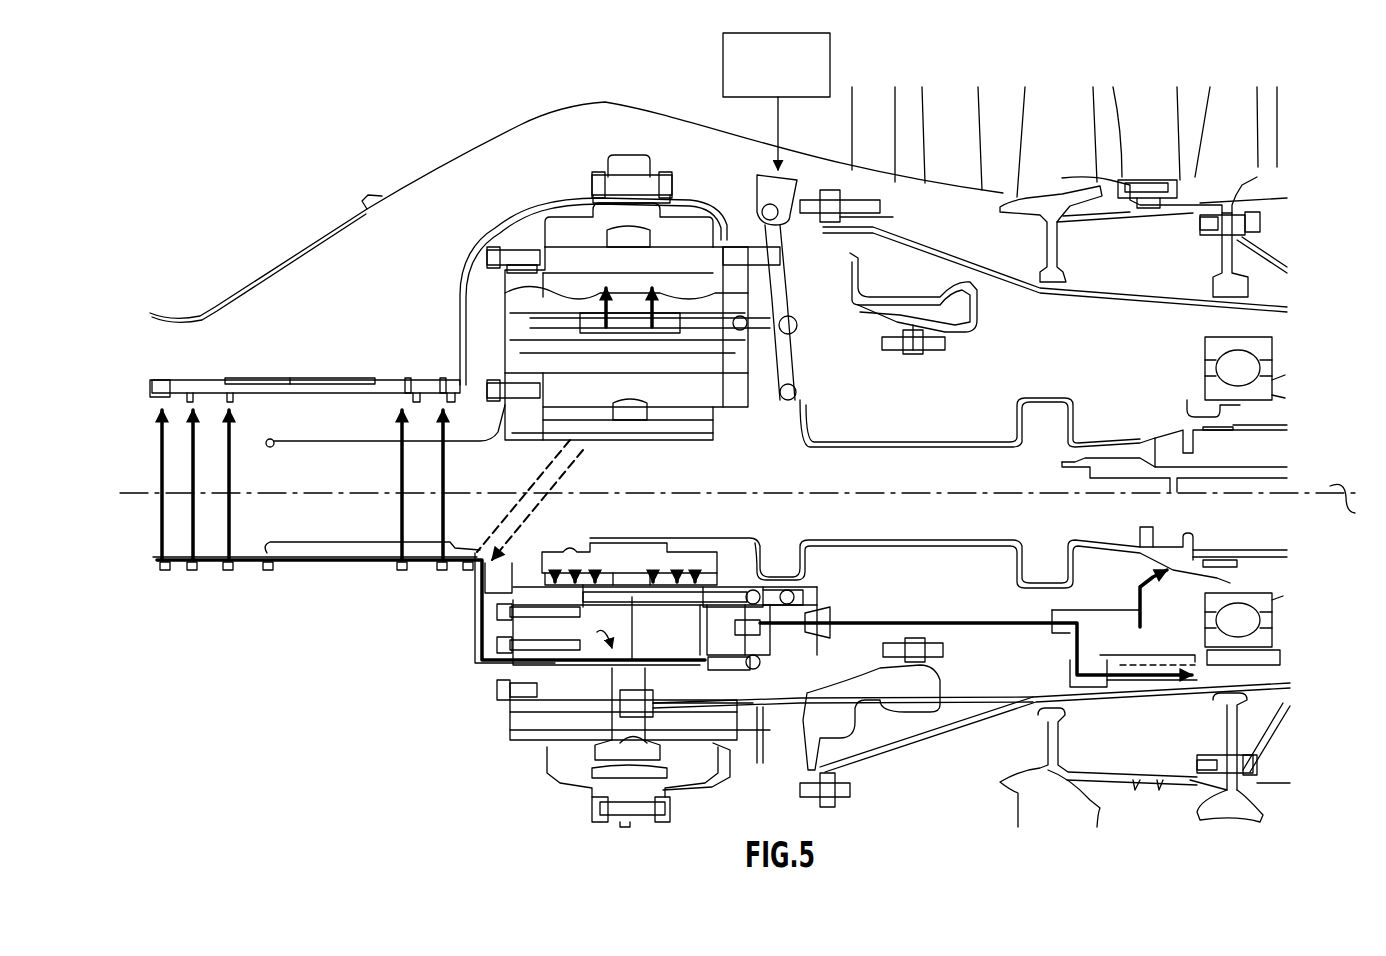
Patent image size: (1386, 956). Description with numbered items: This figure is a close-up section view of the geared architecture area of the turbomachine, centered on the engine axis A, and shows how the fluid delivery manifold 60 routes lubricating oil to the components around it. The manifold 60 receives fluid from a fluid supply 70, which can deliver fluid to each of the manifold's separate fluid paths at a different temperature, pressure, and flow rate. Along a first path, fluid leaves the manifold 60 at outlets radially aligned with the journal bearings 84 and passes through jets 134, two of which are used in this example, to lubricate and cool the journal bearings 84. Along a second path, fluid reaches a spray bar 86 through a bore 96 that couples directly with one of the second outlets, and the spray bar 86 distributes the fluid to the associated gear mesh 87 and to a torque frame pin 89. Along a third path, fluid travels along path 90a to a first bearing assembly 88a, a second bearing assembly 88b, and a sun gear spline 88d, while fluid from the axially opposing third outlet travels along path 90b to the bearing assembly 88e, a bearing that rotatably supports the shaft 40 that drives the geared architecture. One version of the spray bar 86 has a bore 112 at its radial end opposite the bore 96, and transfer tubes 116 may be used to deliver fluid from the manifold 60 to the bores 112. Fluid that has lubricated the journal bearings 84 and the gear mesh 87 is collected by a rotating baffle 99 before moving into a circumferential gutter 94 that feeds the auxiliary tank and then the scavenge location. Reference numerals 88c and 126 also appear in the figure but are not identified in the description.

The shaft 40 is at (1170, 430).
The fluid delivery manifold 60 is at (783, 285).
The fluid supply 70 is at (790, 81).
The journal bearings 84 is at (595, 333).
The spray bar 86 is at (708, 562).
The gear mesh 87 is at (653, 560).
The first bearing assembly 88a is at (240, 427).
The second bearing assembly 88b is at (455, 428).
The airflow 88c is at (1112, 595).
The sun gear spline 88d is at (588, 465).
The bearing assembly 88e is at (1252, 617).
The torque frame pin 89 is at (637, 730).
The path 90a is at (358, 565).
The path 90b is at (990, 628).
The gutter 94 is at (618, 153).
The bore 96 is at (667, 593).
The rotating baffle 99 is at (697, 218).
The bore 112 is at (593, 640).
The transfer tubes 116 is at (520, 650).
The bearing housing 126 is at (594, 345).
The jets 134 is at (605, 308).
The axis A is at (1351, 507).